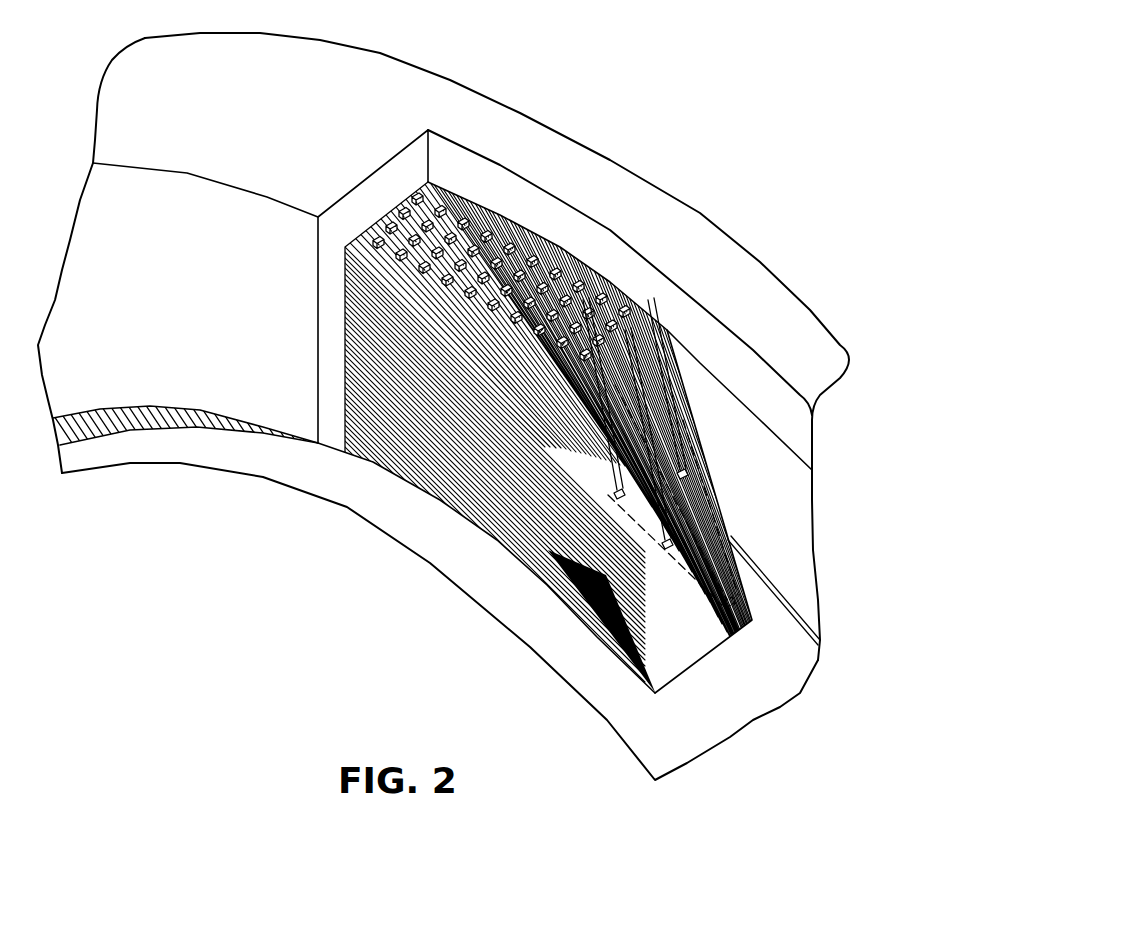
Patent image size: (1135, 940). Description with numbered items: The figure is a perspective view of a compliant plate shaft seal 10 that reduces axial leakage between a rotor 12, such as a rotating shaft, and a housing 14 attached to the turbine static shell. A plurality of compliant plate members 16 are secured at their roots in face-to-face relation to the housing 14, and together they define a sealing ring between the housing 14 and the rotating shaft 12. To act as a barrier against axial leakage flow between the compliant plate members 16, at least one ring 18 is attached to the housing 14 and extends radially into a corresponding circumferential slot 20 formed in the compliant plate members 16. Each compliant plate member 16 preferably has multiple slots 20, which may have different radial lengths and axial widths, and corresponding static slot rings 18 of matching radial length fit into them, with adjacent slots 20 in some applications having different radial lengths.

The shaft seal 10 is at (362, 348).
The rotor 12 is at (712, 705).
The housing 14 is at (592, 172).
The compliant plate members 16 is at (487, 533).
The ring 18 is at (703, 500).
The circumferential slot 20 is at (660, 338).